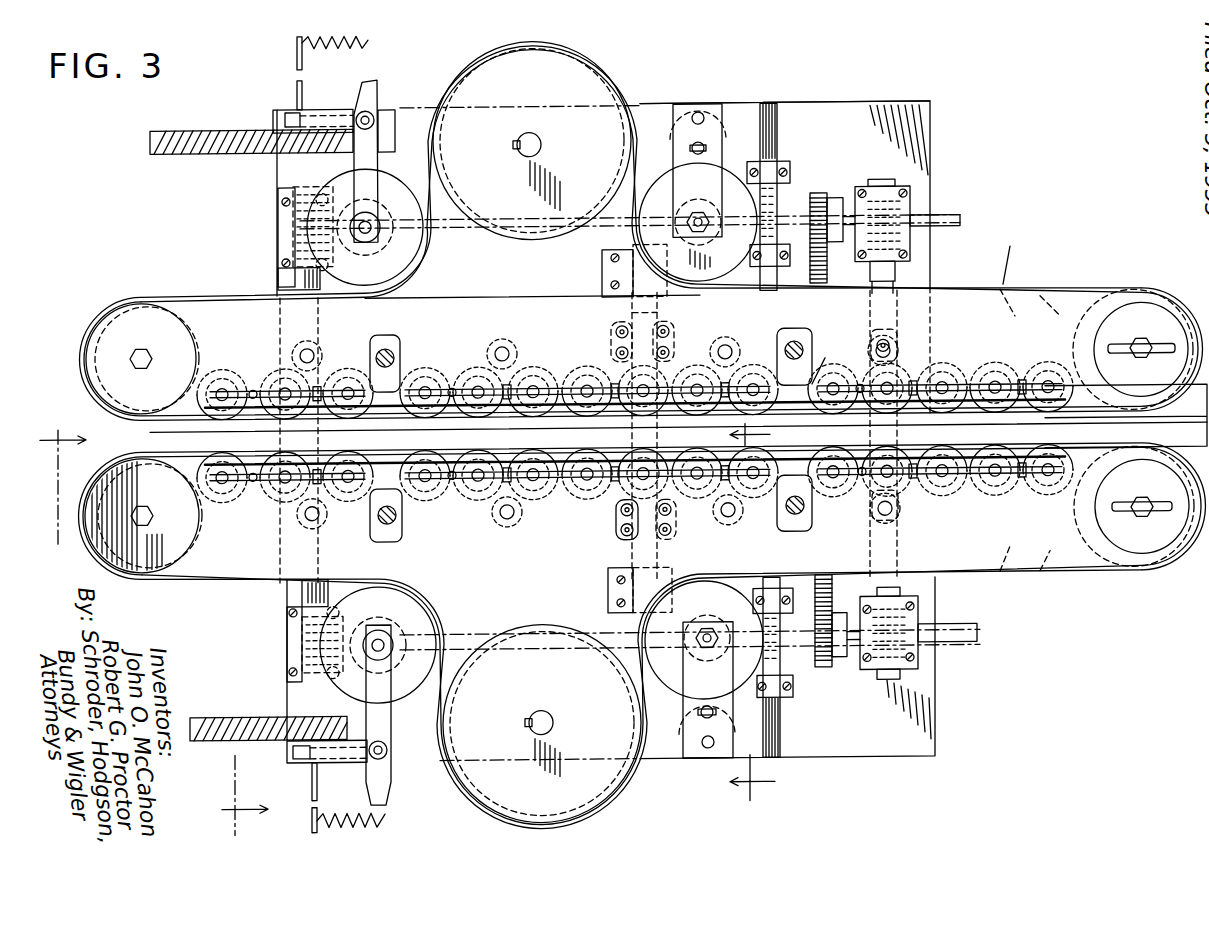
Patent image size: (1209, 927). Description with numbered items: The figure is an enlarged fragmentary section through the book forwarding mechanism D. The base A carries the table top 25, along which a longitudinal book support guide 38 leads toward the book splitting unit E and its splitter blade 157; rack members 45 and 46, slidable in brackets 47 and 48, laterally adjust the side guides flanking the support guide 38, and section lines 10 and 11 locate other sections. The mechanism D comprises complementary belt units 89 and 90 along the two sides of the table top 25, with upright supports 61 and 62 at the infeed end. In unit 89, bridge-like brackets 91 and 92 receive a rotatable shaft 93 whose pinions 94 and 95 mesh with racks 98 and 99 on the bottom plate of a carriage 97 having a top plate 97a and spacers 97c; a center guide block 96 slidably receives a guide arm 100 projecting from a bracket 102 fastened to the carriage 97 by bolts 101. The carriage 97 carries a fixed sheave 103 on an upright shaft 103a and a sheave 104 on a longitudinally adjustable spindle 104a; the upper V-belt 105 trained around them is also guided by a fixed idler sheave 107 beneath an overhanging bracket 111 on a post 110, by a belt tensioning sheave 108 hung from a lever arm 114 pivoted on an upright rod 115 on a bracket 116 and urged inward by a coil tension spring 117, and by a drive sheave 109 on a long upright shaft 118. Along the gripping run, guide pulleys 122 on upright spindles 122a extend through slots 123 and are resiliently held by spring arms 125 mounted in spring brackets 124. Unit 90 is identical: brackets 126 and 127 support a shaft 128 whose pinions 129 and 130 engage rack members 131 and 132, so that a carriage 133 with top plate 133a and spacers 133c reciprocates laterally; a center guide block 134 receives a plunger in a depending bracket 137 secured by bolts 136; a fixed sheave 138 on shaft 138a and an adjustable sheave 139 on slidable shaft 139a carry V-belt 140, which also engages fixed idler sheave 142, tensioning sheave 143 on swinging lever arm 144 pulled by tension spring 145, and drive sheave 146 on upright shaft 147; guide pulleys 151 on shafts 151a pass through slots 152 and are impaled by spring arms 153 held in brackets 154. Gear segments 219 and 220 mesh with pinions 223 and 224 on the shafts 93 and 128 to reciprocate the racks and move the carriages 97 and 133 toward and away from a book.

The section line 10- 10 is at (753, 610).
The section line 11- 11 is at (146, 624).
The table top 25 is at (812, 103).
The book support guide 38 is at (1152, 360).
The rack member 45 is at (800, 715).
The rack member 46 is at (790, 152).
The bracket 47 is at (762, 698).
The bracket 48 is at (780, 162).
The upright support 61 is at (215, 714).
The upright support 62 is at (218, 127).
The book forwarding belt unit 89 is at (1114, 586).
The book forwarding belt unit 90 is at (1134, 282).
The bridge-like bracket 91 is at (287, 656).
The bridge-like bracket 92 is at (918, 606).
The rotatable shaft 93 is at (978, 636).
The pinion 94 is at (302, 630).
The pinion 95 is at (918, 662).
The center guide block 96 is at (608, 590).
The carriage 97 is at (1012, 577).
The top plate 97a is at (1042, 577).
The spacer 97c is at (895, 520).
The rack 98 is at (302, 592).
The rack 99 is at (900, 590).
The guide arm 100 is at (666, 545).
The bolts 101 is at (618, 516).
The bracket 102 is at (616, 540).
The fixed sheave 103 is at (180, 540).
The upright shaft 103a is at (142, 500).
The sheave 104 is at (1145, 575).
The longitudinally adjustable spindle 104a is at (1143, 503).
The upper V-belt 105 is at (212, 582).
The fixed idler guide sheave 107 is at (702, 623).
The belt tensioning sheave 108 is at (408, 606).
The drive sheave 109 is at (690, 722).
The post 110 is at (690, 748).
The overhanging bracket 111 is at (690, 672).
The lever arm 114 is at (366, 700).
The upright rod 115 is at (391, 778).
The bracket 116 is at (312, 778).
The coil tension spring 117 is at (340, 815).
The upright shaft 118 is at (553, 728).
The guide pulleys 122 is at (222, 468).
The upright spindles 122a is at (235, 468).
The slots 123 is at (348, 482).
The spring brackets 124 is at (317, 466).
The spring arms 125 is at (660, 470).
The bridge-like bracket 126 is at (283, 201).
The bridge-like bracket 127 is at (905, 190).
The longitudinal shaft 128 is at (458, 236).
The pinion 129 is at (300, 214).
The pinion 130 is at (910, 202).
The rack member 131 is at (278, 271).
The rack member 132 is at (897, 278).
The carriage 133 is at (1010, 293).
The top plate 133a is at (1060, 296).
The spacers 133c is at (892, 343).
The center guide block 134 is at (602, 264).
The bolts 136 is at (614, 344).
The depending bracket 137 is at (612, 324).
The fixed sheave 138 is at (108, 293).
The upright shaft 138a is at (130, 352).
The longitudinally adjustable sheave 139 is at (1150, 293).
The slidable shaft 139a is at (1141, 364).
The V-belt 140 is at (167, 292).
The fixed idler sheave 142 is at (657, 165).
The belt tensioning sheave 143 is at (330, 174).
The swinging lever arm 144 is at (378, 93).
The tension spring 145 is at (372, 40).
The drive sheave 146 is at (578, 78).
The upright shaft 147 is at (541, 141).
The guide pulleys 151 is at (224, 376).
The upright shafts 151a is at (215, 386).
The slots 152 is at (212, 386).
The spring arms 153 is at (292, 357).
The brackets 154 is at (509, 384).
The splitter blade 157 is at (1160, 440).
The gear segment 219 is at (815, 530).
The gear segment 220 is at (822, 290).
The pinion 223 is at (828, 670).
The pinion 224 is at (822, 195).
The base A is at (927, 100).
The book forwarding mechanism D is at (1003, 288).
The book splitting unit E is at (825, 360).